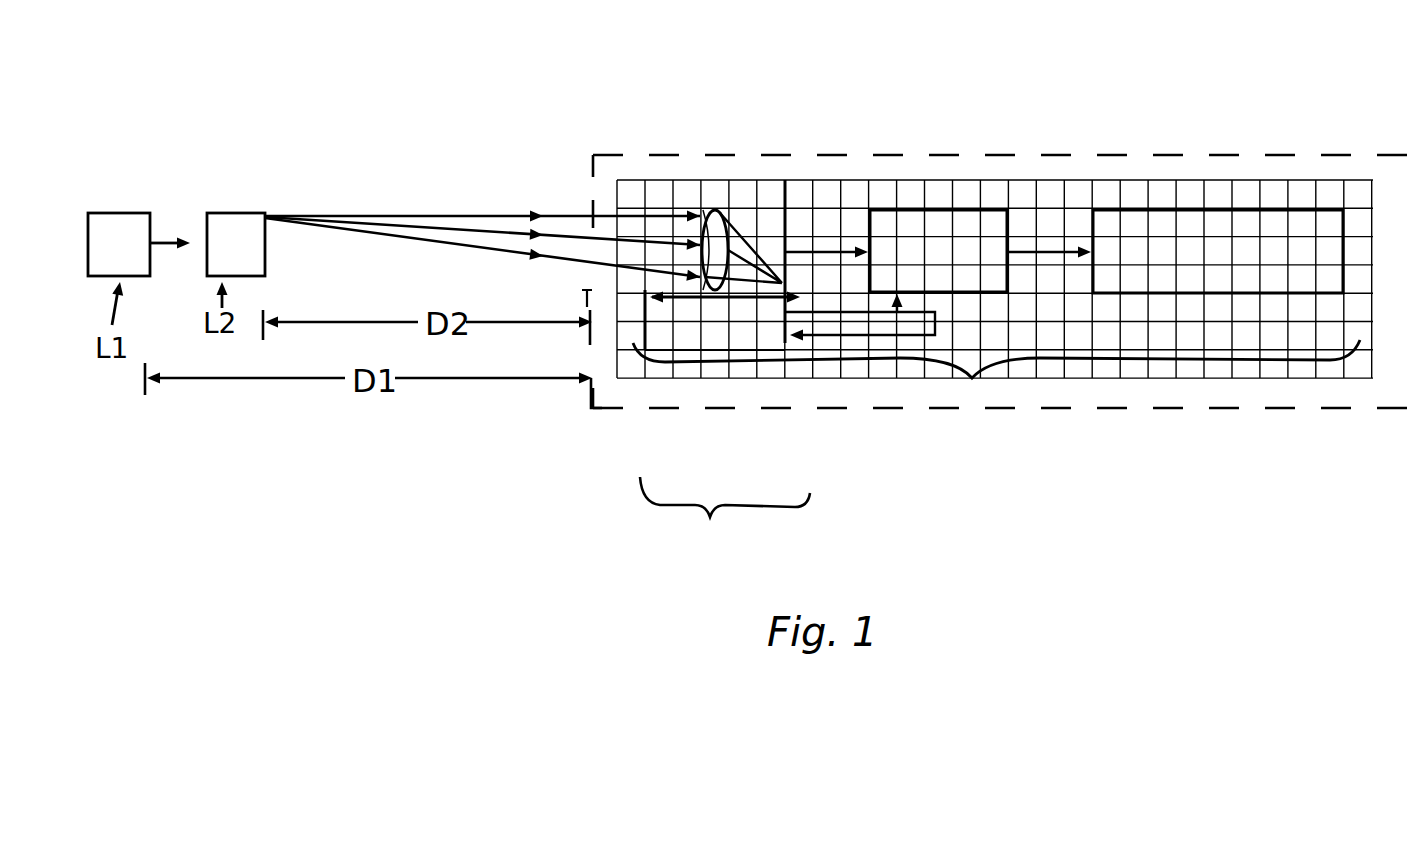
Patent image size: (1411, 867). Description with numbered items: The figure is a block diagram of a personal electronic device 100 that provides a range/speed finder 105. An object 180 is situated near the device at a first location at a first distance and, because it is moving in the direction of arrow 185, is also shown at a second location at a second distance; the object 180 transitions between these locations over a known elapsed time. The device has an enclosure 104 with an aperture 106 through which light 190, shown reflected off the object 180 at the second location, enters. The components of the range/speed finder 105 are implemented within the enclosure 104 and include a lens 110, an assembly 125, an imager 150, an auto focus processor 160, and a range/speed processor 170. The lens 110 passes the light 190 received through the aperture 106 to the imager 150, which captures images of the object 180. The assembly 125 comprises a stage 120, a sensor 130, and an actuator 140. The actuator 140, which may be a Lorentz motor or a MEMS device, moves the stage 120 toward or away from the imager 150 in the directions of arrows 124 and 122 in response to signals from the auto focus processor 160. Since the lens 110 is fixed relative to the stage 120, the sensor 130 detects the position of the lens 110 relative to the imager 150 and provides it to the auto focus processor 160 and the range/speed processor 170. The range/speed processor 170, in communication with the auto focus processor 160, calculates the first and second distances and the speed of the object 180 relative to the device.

The personal electronic device 100 is at (1146, 42).
The enclosure 104 is at (1028, 157).
The range/speed finder 105 is at (995, 296).
The aperture 106 is at (578, 208).
The lens 110 is at (713, 210).
The stage 120 is at (747, 298).
The arrow 122 is at (648, 294).
The arrow 124 is at (754, 299).
The assembly 125 is at (725, 516).
The sensor 130 is at (715, 295).
The actuator 140 is at (683, 338).
The imager 150 is at (793, 287).
The auto focus processor 160 is at (933, 210).
The range/speed processor 170 is at (1210, 210).
The object 180 is at (110, 212).
The arrow 185 is at (164, 243).
The light 190 is at (408, 202).